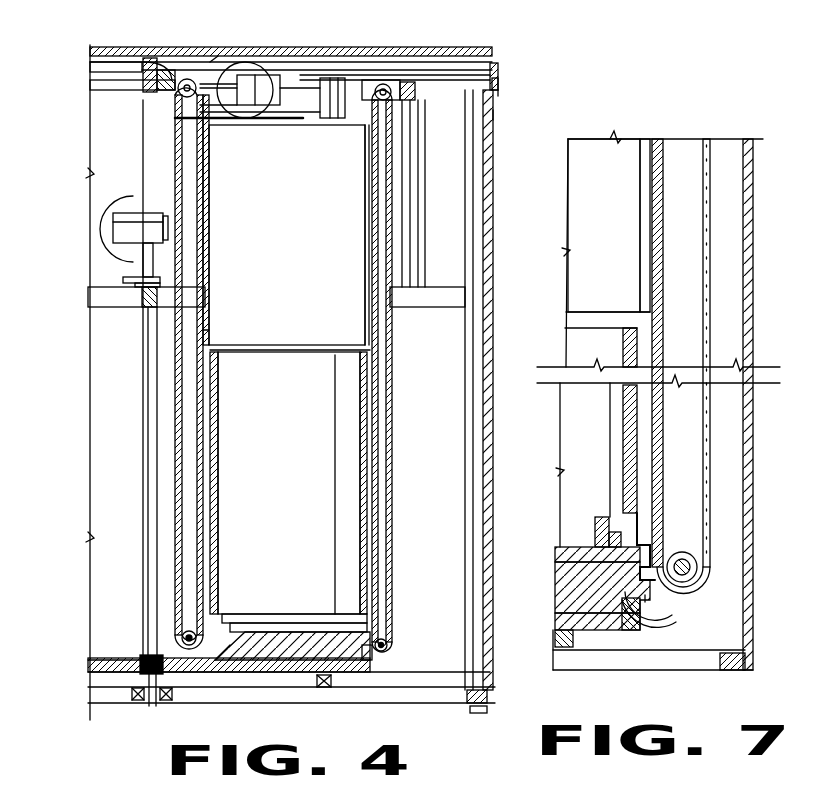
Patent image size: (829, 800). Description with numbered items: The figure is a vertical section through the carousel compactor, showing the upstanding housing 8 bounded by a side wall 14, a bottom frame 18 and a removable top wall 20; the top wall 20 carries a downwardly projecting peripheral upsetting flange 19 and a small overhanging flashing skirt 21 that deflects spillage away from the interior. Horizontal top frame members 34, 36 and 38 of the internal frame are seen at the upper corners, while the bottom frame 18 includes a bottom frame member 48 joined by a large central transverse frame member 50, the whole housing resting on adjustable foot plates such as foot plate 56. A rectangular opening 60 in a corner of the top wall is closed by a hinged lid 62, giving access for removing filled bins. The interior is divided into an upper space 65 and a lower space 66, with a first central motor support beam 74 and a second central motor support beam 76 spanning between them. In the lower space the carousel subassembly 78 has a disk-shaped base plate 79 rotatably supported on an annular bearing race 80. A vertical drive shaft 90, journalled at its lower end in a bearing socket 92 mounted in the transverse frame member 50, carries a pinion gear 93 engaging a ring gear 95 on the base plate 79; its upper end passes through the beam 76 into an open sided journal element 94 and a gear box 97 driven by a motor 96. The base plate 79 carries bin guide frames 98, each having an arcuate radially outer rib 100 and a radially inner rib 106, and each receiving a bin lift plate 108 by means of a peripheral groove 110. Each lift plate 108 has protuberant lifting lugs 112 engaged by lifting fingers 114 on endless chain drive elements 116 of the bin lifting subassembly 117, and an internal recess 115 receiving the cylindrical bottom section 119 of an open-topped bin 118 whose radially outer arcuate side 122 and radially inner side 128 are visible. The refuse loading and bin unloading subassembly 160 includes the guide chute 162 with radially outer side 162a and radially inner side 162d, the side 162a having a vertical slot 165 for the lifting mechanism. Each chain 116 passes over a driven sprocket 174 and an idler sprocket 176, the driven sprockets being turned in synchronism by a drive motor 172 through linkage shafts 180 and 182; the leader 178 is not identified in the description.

In FIG. 4, the housing 8 is at (498, 115).
In FIG. 4, the side wall 14 is at (492, 258).
In FIG. 7, the side wall 14 is at (753, 260).
In FIG. 4, the bottom frame 18 is at (95, 708).
In FIG. 4, the peripheral upsetting flange 19 is at (105, 64).
In FIG. 4, the top wall 20 is at (127, 50).
In FIG. 4, the flashing skirt 21 is at (500, 88).
In FIG. 4, the top frame member 34 is at (90, 85).
In FIG. 4, the top frame member 36 is at (497, 62).
In FIG. 4, the top frame member 38 is at (500, 78).
In FIG. 4, the bottom frame member 48 is at (490, 705).
In FIG. 7, the bottom frame member 48 is at (733, 670).
In FIG. 4, the central transverse frame member 50 is at (278, 690).
In FIG. 7, the central transverse frame member 50 is at (637, 655).
In FIG. 4, the foot plate 56 is at (480, 714).
In FIG. 4, the rectangular opening 60 is at (160, 90).
In FIG. 4, the hinged rectangular lid 62 is at (420, 58).
In FIG. 4, the upper space 65 is at (118, 143).
In FIG. 4, the lower space 66 is at (101, 433).
In FIG. 4, the first central motor support beam 74 is at (100, 297).
In FIG. 4, the second central motor support beam 76 is at (140, 308).
In FIG. 4, the carousel subassembly 78 is at (117, 646).
In FIG. 4, the base plate 79 is at (100, 665).
In FIG. 7, the base plate 79 is at (593, 620).
In FIG. 4, the annular bearing race 80 is at (323, 690).
In FIG. 7, the annular bearing race 80 is at (555, 640).
In FIG. 4, the drive shaft 90 is at (146, 458).
In FIG. 4, the bearing socket 92 is at (165, 702).
In FIG. 4, the pinion gear 93 is at (140, 668).
In FIG. 4, the open sided journal element 94 is at (124, 280).
In FIG. 4, the ring gear 95 is at (168, 703).
In FIG. 4, the motor 96 is at (104, 214).
In FIG. 4, the gear box 97 is at (130, 230).
In FIG. 7, the bin guide frame 98 is at (648, 598).
In FIG. 4, the arcuate radially outer rib 100 is at (373, 655).
In FIG. 7, the arcuate radially outer rib 100 is at (638, 594).
In FIG. 4, the radially inner rib 106 is at (208, 662).
In FIG. 4, the bin lift plate 108 is at (262, 645).
In FIG. 7, the bin lift plate 108 is at (572, 588).
In FIG. 7, the peripheral groove 110 is at (628, 622).
In FIG. 7, the lifting lug 112 is at (650, 560).
In FIG. 7, the lifting finger 114 is at (594, 546).
In FIG. 4, the internal recess 115 is at (350, 628).
In FIG. 7, the internal recess 115 is at (617, 537).
In FIG. 4, the endless chain drive element 116 is at (393, 420).
In FIG. 4, the bin lifting subassembly 117 is at (214, 62).
In FIG. 4, the refuse-receiving open-topped bin 118 is at (230, 392).
In FIG. 7, the refuse-receiving open-topped bin 118 is at (620, 398).
In FIG. 4, the bottom section 119 is at (256, 622).
In FIG. 7, the bottom section 119 is at (563, 550).
In FIG. 4, the radially outer arcuate side 122 is at (362, 436).
In FIG. 7, the radially outer arcuate side 122 is at (630, 328).
In FIG. 4, the radially inner side 128 is at (221, 476).
In FIG. 4, the refuse loading and bin unloading subassembly 160 is at (290, 62).
In FIG. 4, the guide chute 162 is at (214, 207).
In FIG. 7, the guide chute 162 is at (640, 163).
In FIG. 4, the chute side 162a is at (368, 316).
In FIG. 7, the chute side 162a is at (617, 201).
In FIG. 4, the chute side 162d is at (212, 322).
In FIG. 7, the vertically extending slot 165 is at (645, 145).
In FIG. 4, the drive motor 172 is at (234, 52).
In FIG. 4, the driven sprocket 174 is at (194, 78).
In FIG. 4, the idler sprocket 176 is at (186, 630).
In FIG. 7, the idler sprocket 176 is at (700, 560).
In FIG. 7, the belt run 178 is at (710, 200).
In FIG. 4, the shaft 180 is at (224, 122).
In FIG. 4, the shaft 182 is at (298, 95).